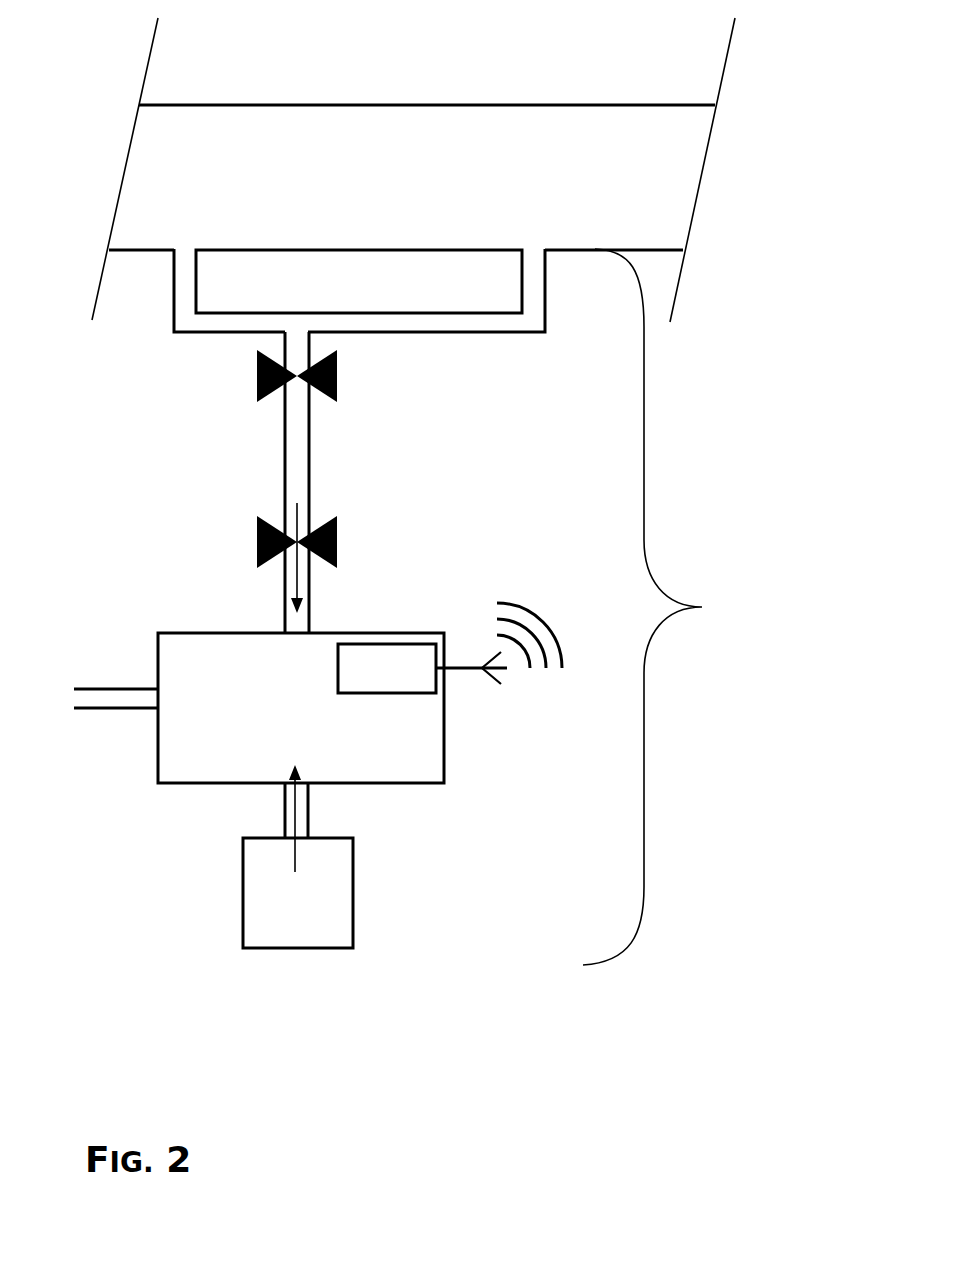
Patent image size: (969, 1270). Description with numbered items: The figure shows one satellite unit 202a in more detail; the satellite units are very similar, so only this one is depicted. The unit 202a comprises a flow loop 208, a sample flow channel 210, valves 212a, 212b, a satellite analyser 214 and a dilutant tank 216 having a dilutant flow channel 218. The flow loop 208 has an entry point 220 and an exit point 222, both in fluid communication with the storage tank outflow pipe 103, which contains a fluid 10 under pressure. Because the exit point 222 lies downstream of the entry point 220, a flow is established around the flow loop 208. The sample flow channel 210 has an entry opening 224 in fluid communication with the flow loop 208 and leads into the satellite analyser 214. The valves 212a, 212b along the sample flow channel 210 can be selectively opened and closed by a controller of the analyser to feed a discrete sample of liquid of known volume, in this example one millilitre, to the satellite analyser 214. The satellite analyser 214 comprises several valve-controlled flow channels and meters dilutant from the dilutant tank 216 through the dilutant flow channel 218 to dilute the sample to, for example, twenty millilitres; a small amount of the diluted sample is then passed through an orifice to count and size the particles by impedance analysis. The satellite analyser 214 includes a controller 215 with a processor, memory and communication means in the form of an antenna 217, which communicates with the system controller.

The fluid 10 is at (399, 182).
The storage tank outflow pipe 103 is at (485, 118).
The entry point 220 is at (184, 255).
The exit point 222 is at (533, 250).
The flow loop 208 is at (190, 333).
The entry opening 224 is at (298, 332).
The sample flow channel 210 is at (310, 453).
The valve 212a is at (337, 388).
The valve 212b is at (337, 558).
The satellite analyser 214 is at (420, 704).
The controller 215 is at (369, 679).
The antenna 217 is at (467, 655).
The dilutant flow channel 218 is at (308, 802).
The dilutant tank 216 is at (282, 906).
The satellite unit 202a is at (677, 607).